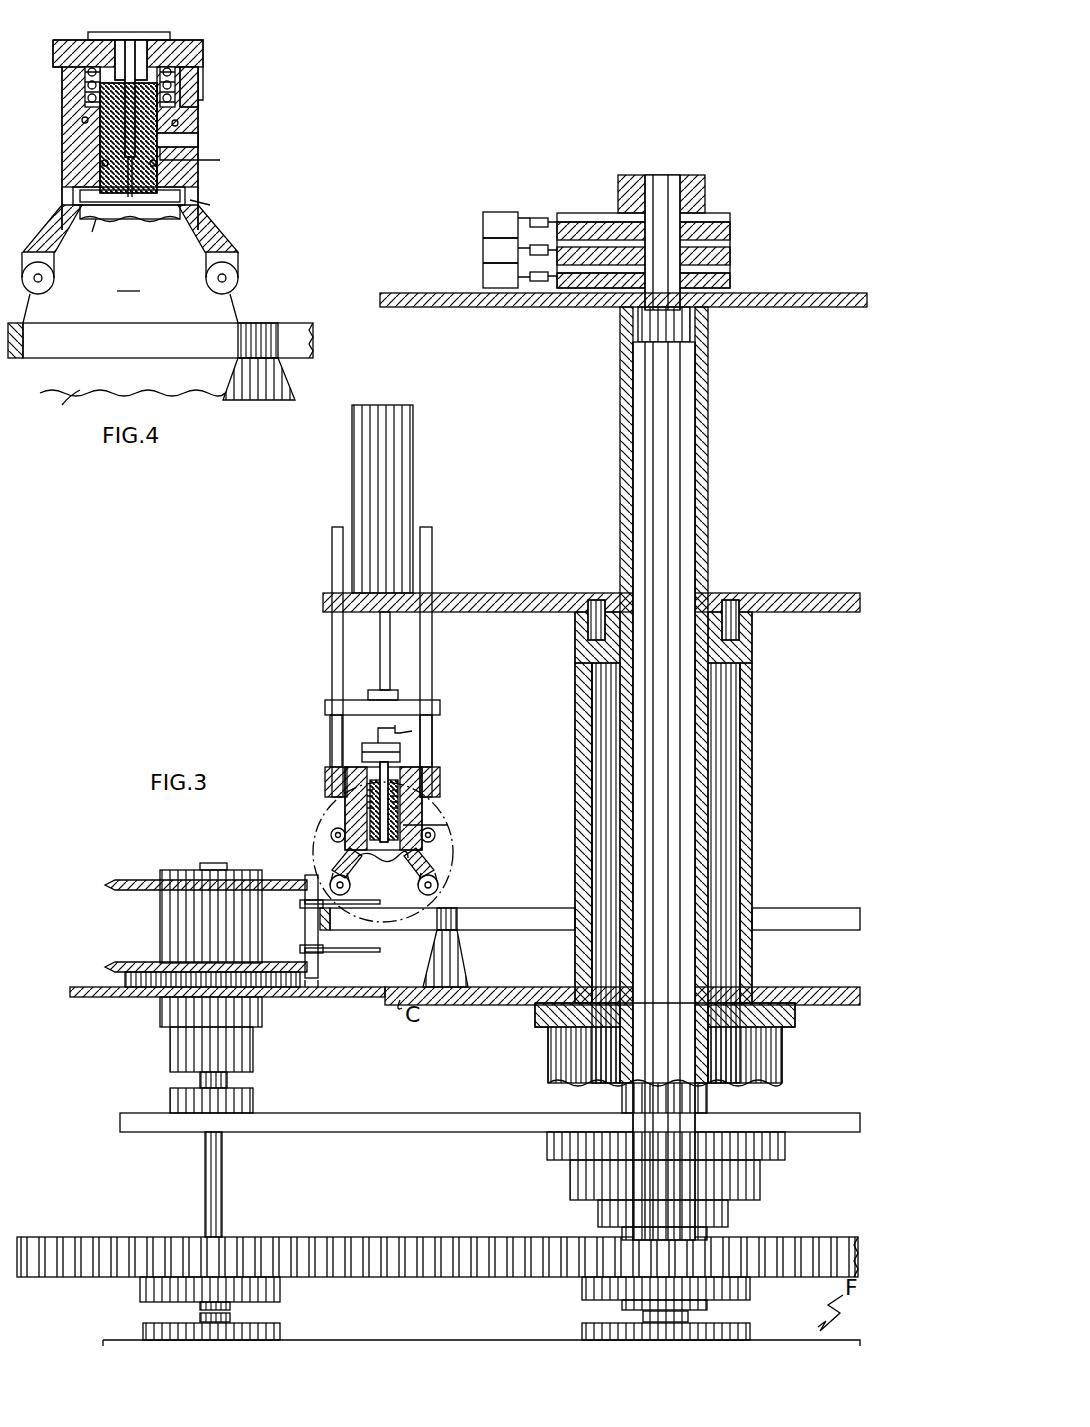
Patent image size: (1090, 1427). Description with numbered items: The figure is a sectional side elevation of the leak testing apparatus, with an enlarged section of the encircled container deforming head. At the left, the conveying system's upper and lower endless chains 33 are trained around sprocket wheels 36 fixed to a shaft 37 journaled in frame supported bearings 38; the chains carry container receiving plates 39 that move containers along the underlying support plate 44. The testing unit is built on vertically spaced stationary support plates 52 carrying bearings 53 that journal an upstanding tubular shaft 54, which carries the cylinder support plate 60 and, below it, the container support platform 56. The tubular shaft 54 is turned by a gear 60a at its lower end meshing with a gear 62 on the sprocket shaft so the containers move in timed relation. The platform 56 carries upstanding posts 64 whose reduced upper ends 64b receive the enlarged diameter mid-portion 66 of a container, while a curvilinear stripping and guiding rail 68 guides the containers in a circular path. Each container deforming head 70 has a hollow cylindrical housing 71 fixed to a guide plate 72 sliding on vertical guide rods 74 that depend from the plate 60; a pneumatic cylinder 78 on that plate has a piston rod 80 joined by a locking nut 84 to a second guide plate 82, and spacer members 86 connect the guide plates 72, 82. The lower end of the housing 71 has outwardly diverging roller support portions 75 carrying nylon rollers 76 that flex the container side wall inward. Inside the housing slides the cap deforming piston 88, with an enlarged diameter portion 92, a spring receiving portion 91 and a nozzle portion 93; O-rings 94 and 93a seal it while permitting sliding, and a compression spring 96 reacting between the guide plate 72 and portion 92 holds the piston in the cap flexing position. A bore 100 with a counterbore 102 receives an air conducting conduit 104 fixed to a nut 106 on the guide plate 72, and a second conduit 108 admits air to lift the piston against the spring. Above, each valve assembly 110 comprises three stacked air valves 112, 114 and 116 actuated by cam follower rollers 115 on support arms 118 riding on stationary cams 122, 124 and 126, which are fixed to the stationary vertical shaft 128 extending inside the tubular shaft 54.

In FIG. 3, the valve assembly 110 is at (450, 175).
In FIG. 3, the air-valve 112 is at (490, 212).
In FIG. 3, the air-valve 114 is at (488, 240).
In FIG. 3, the air-valve 116 is at (488, 268).
In FIG. 3, the support arm 118 is at (525, 218).
In FIG. 3, the cam follower roller 115 is at (537, 218).
In FIG. 3, the stationary cam 122 is at (595, 213).
In FIG. 3, the stationary cam 124 is at (552, 222).
In FIG. 3, the stationary cam 126 is at (577, 288).
In FIG. 3, the stationary vertical shaft 128 is at (680, 203).
In FIG. 3, the tubular shaft 54 is at (708, 430).
In FIG. 3, the container support platform 56 is at (535, 987).
In FIG. 3, the cylinder support plate 60 is at (510, 593).
In FIG. 3, the gear 60a is at (525, 1240).
In FIG. 3, the gear 62 is at (278, 1250).
In FIG. 3, the stationary support plate 52 is at (505, 1113).
In FIG. 3, the bearing 53 is at (547, 1148).
In FIG. 3, the cylinder 78 is at (413, 445).
In FIG. 3, the vertical guide rod 74 is at (332, 618).
In FIG. 3, the piston rod 80 is at (380, 655).
In FIG. 3, the guide plate 82 is at (325, 707).
In FIG. 3, the locking nut 84 is at (398, 695).
In FIG. 3, the spacer member 86 is at (330, 760).
In FIG. 3, the air conducting conduit 104 is at (400, 731).
In FIG. 4, the air conducting conduit 104 is at (128, 45).
In FIG. 3, the nut 106 is at (405, 760).
In FIG. 4, the nut 106 is at (112, 32).
In FIG. 4, the container deforming head 70 is at (246, 78).
In FIG. 3, the cylindrical housing 71 is at (348, 810).
In FIG. 4, the cylindrical housing 71 is at (198, 188).
In FIG. 4, the guide plate 72 is at (203, 45).
In FIG. 3, the cap deforming piston 88 is at (331, 833).
In FIG. 4, the cap deforming piston 88 is at (198, 140).
In FIG. 3, the air conducting conduit 108 is at (440, 825).
In FIG. 4, the air conducting conduit 108 is at (220, 160).
In FIG. 3, the roller support portion 75 is at (432, 862).
In FIG. 4, the roller support portion 75 is at (205, 230).
In FIG. 3, the nylon roller 76 is at (438, 888).
In FIG. 4, the nylon roller 76 is at (45, 293).
In FIG. 3, the enlarged diameter mid-portion 66 is at (405, 930).
In FIG. 4, the enlarged diameter mid-portion 66 is at (100, 350).
In FIG. 3, the container stripping and guiding rail 68 is at (535, 908).
In FIG. 4, the container stripping and guiding rail 68 is at (14, 323).
In FIG. 3, the upstanding post 64 is at (466, 970).
In FIG. 3, the reduced upper end 64b is at (457, 925).
In FIG. 4, the reduced upper end 64b is at (278, 335).
In FIG. 3, the endless chain 33 is at (305, 878).
In FIG. 3, the sprocket wheel 36 is at (128, 962).
In FIG. 3, the container receiving plate 39 is at (352, 952).
In FIG. 3, the support plate 44 is at (115, 997).
In FIG. 3, the shaft 37 is at (222, 1172).
In FIG. 3, the bearing 38 is at (280, 1290).
In FIG. 4, the spring receiving portion 91 is at (85, 87).
In FIG. 4, the enlarged diameter portion 92 is at (100, 135).
In FIG. 4, the nozzle portion 93 is at (73, 183).
In FIG. 4, the O-ring 93a is at (100, 163).
In FIG. 4, the O-ring 94 is at (82, 120).
In FIG. 4, the compression spring 96 is at (198, 72).
In FIG. 4, the bore 100 is at (148, 219).
In FIG. 4, the counterbore 102 is at (178, 123).